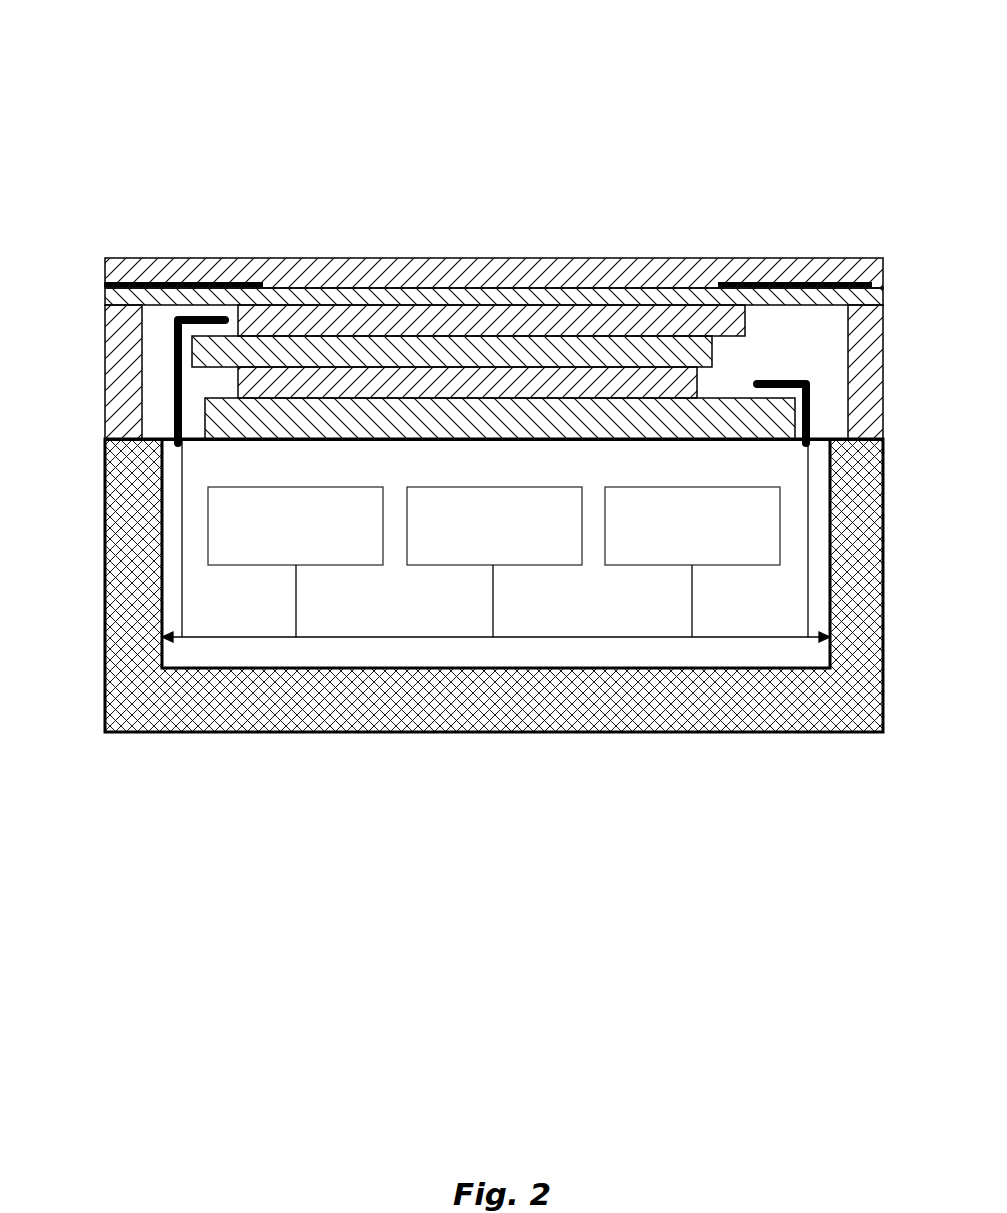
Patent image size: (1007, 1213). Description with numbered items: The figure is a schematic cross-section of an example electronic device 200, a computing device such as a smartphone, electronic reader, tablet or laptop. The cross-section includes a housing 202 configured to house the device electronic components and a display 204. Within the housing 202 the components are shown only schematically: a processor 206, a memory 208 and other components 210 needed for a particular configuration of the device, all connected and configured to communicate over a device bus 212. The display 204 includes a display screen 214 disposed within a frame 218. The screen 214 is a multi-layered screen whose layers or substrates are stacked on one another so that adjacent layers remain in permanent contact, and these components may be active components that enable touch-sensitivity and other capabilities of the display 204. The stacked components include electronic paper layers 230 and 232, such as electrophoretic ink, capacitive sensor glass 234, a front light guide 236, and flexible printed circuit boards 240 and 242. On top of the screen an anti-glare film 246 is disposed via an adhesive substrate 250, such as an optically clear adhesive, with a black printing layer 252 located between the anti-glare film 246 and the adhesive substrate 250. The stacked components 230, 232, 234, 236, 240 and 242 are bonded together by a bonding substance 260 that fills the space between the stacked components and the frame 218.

The electronic device 200 is at (752, 56).
The housing 202 is at (223, 732).
The display 204 is at (771, 343).
The processor 206 is at (352, 547).
The memory 208 is at (447, 548).
The other components 210 is at (636, 548).
The device bus 212 is at (730, 637).
The display screen 214 is at (528, 259).
The frame 218 is at (858, 352).
The electronic paper layer 230 is at (367, 413).
The electronic paper layer 232 is at (477, 377).
The capacitive sensor glass 234 is at (604, 350).
The front light guide 236 is at (714, 322).
The flexible printed circuit board 240 is at (173, 375).
The flexible printed circuit board 242 is at (812, 417).
The anti-glare film 246 is at (337, 283).
The adhesive substrate 250 is at (840, 287).
The black printing layer 252 is at (193, 283).
The bonding substance 260 is at (158, 358).